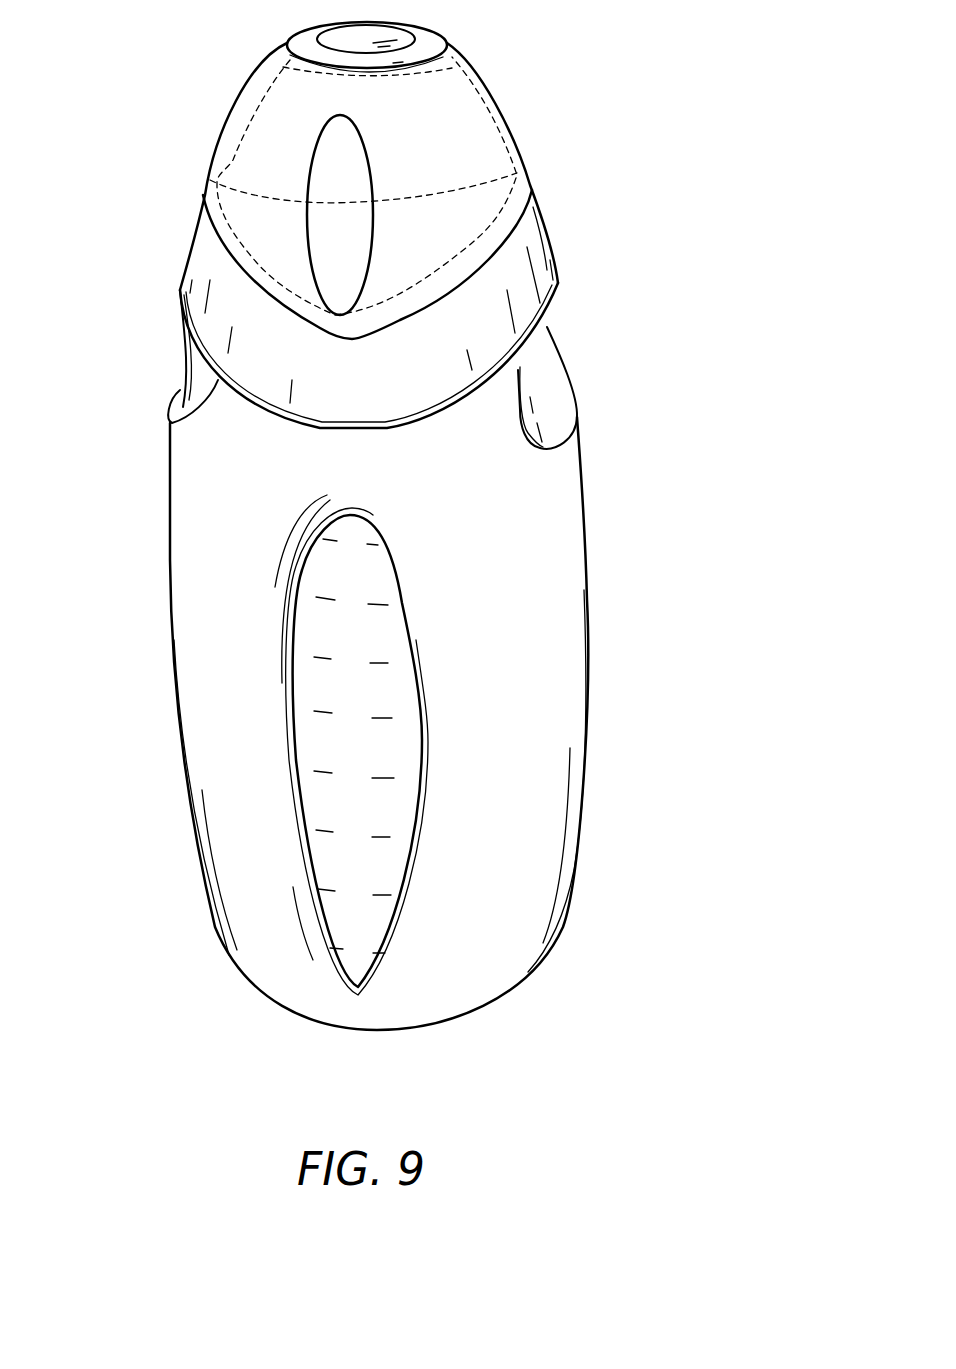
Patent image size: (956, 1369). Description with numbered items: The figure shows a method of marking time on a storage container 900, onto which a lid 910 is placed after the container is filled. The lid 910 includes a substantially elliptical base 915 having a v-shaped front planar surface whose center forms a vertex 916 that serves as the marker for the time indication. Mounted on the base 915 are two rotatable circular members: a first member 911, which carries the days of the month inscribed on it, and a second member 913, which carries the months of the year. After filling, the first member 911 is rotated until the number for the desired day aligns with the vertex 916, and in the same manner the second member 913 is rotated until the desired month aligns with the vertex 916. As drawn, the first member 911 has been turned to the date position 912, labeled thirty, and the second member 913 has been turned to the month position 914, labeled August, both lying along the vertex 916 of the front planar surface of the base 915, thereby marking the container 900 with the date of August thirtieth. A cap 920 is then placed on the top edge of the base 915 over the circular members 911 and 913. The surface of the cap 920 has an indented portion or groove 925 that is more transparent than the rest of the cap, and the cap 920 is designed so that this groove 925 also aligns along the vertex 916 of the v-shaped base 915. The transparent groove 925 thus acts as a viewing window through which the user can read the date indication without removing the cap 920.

The storage container 900 is at (253, 1052).
The lid 910 is at (293, 303).
The first member 911 is at (477, 190).
The date position 912 is at (317, 228).
The second member 913 is at (407, 127).
The month position 914 is at (325, 160).
The elliptical base 915 is at (447, 383).
The vertex 916 is at (357, 407).
The cap 920 is at (443, 42).
The groove 925 is at (347, 275).